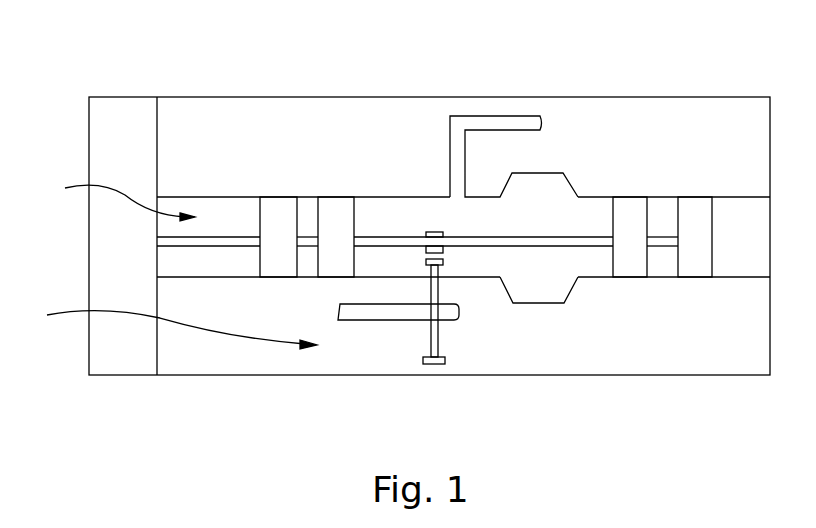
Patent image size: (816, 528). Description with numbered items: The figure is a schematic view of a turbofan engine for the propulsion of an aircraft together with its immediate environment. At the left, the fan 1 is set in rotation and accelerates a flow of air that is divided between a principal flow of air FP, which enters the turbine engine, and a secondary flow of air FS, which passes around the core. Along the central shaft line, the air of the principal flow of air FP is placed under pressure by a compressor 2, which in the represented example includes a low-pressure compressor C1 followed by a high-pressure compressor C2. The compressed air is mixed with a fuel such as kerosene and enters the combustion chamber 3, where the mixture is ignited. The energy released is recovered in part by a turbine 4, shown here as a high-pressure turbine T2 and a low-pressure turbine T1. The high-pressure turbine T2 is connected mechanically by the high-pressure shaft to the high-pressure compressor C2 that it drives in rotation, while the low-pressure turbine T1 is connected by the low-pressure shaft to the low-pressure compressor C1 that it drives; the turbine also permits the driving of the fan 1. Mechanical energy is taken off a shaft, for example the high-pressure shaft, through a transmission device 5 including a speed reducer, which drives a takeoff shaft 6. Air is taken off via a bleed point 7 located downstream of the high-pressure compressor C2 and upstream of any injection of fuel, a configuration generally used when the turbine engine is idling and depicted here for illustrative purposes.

The fan 1 is at (130, 137).
The compressor 2 is at (353, 82).
The combustion chamber 3 is at (537, 258).
The turbine 4 is at (709, 80).
The transmission device 5 is at (443, 262).
The takeoff shaft 6 is at (368, 311).
The bleed point 7 is at (458, 178).
The low-pressure compressor C1 is at (277, 240).
The high-pressure compressor C2 is at (333, 240).
The low-pressure turbine T1 is at (691, 242).
The high-pressure turbine T2 is at (625, 242).
The principal flow of air FP is at (112, 202).
The secondary flow of air FS is at (164, 328).